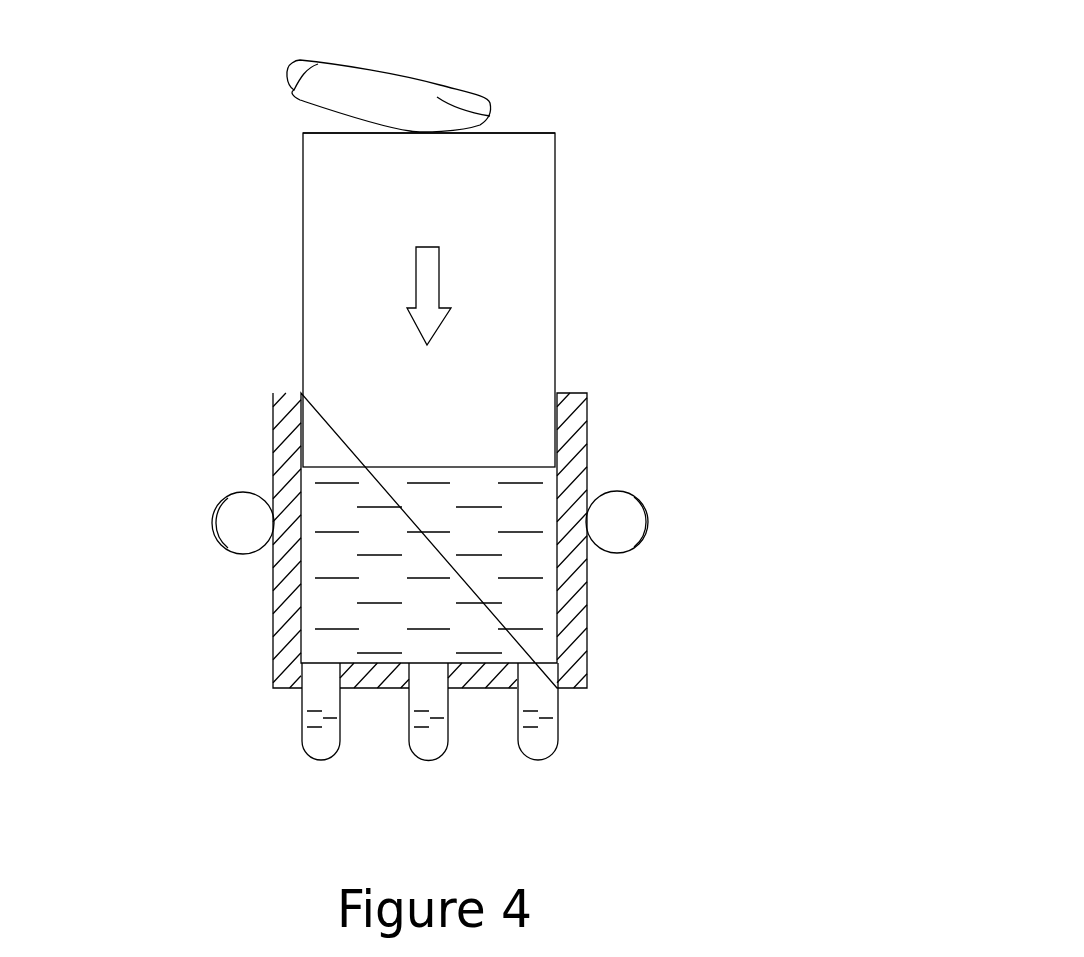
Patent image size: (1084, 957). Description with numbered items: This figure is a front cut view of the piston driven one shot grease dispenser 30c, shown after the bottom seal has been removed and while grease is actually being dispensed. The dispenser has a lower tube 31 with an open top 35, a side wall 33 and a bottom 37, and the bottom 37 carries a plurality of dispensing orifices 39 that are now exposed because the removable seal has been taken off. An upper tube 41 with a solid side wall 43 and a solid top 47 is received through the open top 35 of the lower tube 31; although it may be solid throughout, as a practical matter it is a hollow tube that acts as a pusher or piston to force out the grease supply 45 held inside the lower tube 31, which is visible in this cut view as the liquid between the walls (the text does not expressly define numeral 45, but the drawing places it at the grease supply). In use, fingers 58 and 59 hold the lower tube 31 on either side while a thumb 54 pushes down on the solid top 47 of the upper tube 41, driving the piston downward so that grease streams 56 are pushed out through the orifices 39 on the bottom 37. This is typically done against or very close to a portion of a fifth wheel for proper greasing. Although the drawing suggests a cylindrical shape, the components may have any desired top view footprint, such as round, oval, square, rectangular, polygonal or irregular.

The piston driven one shot grease dispenser 30c is at (776, 283).
The lower tube 31 is at (436, 563).
The side wall 33 is at (273, 603).
The open top 35 is at (557, 393).
The bottom 37 is at (482, 688).
The dispensing orifices 39 is at (322, 680).
The upper tube 41 is at (542, 295).
The solid side wall 43 is at (337, 256).
The liquid in container 45 is at (555, 467).
The solid top 47 is at (500, 132).
The thumb 54 is at (348, 98).
The grease streams 56 is at (514, 744).
The finger 58 is at (222, 525).
The finger 59 is at (640, 522).